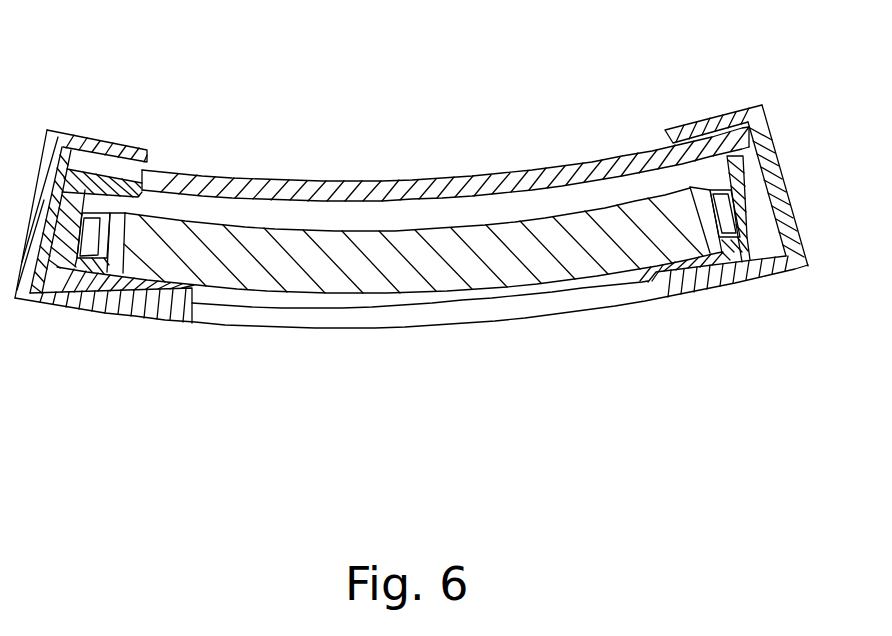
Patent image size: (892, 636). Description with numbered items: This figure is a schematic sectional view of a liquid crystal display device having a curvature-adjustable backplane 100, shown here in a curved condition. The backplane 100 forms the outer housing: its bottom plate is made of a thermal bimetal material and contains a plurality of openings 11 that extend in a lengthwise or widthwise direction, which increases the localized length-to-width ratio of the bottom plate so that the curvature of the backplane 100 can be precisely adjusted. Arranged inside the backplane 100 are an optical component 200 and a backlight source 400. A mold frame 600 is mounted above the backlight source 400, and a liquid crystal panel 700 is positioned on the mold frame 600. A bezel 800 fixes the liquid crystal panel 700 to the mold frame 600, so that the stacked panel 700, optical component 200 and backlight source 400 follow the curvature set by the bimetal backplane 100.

The backplane 100 is at (105, 300).
The bezel 800 is at (98, 150).
The liquid crystal panel 700 is at (232, 187).
The optical component 200 is at (358, 263).
The openings 11 is at (508, 308).
The mold frame 600 is at (717, 162).
The backlight source 400 is at (728, 217).